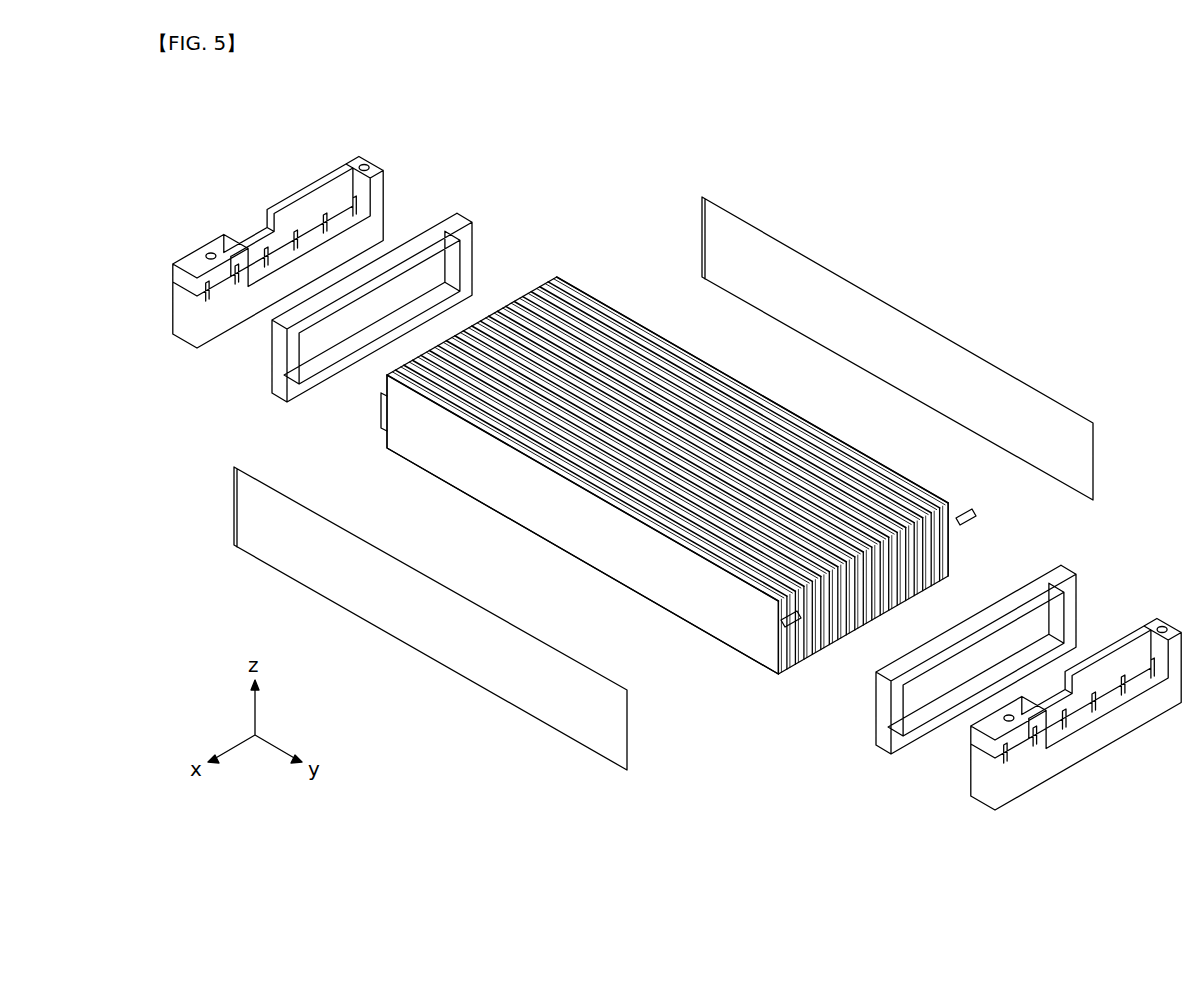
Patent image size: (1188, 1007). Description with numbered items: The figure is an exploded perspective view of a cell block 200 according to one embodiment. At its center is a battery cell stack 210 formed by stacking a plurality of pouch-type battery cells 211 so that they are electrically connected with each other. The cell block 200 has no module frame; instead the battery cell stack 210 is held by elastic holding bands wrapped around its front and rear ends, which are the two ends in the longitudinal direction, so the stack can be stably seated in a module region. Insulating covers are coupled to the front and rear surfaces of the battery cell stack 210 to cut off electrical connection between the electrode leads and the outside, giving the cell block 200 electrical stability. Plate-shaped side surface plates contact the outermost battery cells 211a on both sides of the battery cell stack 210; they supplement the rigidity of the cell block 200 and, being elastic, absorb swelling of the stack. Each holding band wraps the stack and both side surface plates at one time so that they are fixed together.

The cell block 200 is at (811, 129).
The battery cell stack 210 is at (619, 290).
The battery cell 211 is at (675, 376).
The outermost battery cell 211a is at (626, 565).